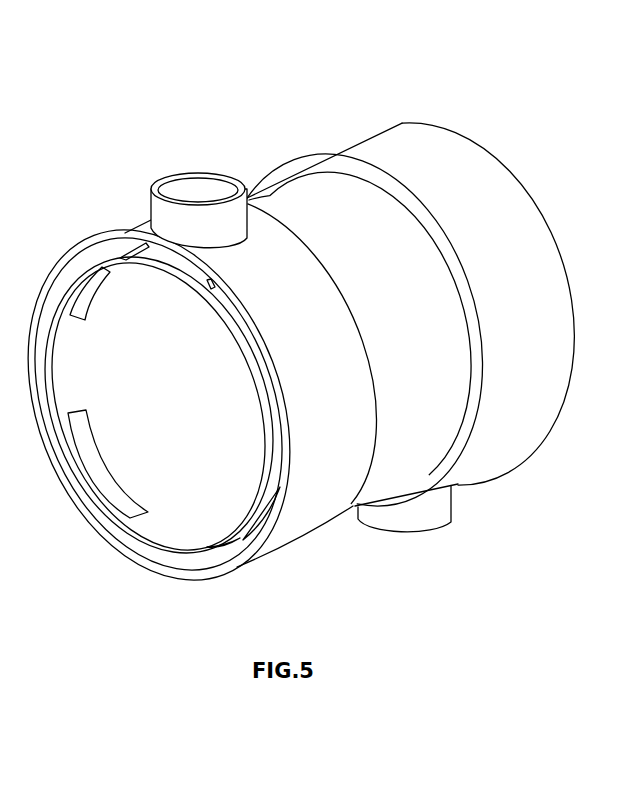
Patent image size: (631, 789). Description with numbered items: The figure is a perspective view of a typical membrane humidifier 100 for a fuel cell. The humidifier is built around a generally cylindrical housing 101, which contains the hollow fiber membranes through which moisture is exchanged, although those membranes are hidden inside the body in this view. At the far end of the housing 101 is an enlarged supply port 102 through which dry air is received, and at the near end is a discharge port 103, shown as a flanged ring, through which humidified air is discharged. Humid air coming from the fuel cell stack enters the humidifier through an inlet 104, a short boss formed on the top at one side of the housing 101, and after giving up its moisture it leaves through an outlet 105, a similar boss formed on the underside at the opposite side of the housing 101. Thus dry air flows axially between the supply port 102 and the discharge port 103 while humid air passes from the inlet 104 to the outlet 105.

The membrane humidifier 100 is at (261, 138).
The housing 101 is at (288, 283).
The supply port 102 is at (515, 180).
The discharge port 103 is at (147, 550).
The inlet 104 is at (188, 190).
The outlet 105 is at (418, 530).